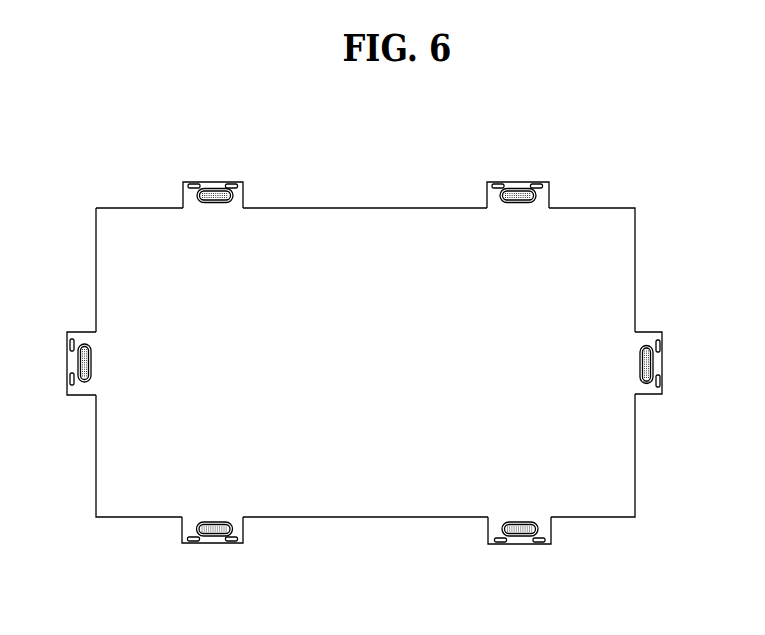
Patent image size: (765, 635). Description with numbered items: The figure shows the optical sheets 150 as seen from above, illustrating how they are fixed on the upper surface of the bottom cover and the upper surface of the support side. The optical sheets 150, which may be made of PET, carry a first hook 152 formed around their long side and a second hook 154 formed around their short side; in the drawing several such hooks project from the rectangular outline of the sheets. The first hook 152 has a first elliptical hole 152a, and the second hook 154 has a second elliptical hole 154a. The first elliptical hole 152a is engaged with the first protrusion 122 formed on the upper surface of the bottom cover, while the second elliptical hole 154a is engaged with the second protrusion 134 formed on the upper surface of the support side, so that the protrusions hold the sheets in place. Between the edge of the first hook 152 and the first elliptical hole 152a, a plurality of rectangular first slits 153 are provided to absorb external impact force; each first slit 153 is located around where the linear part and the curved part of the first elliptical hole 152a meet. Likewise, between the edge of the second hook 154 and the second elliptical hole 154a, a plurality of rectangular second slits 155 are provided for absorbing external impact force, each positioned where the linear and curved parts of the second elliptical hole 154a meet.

The optical sheets 150 is at (370, 222).
The first hook 152 is at (549, 532).
The first elliptical hole 152a is at (500, 528).
The first protrusion 122 is at (518, 521).
The first slits 153 is at (539, 543).
The second hook 154 is at (645, 337).
The second elliptical hole 154a is at (647, 386).
The second protrusion 134 is at (640, 365).
The second slits 155 is at (660, 381).